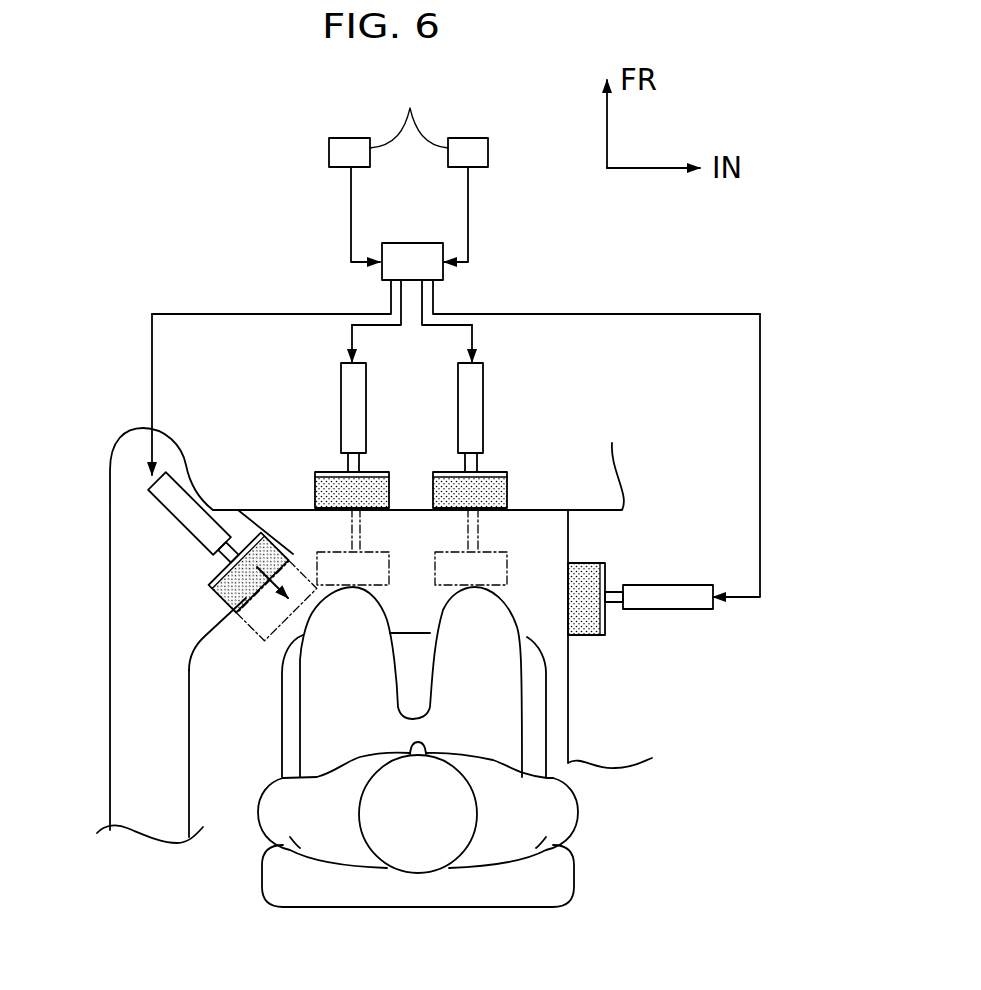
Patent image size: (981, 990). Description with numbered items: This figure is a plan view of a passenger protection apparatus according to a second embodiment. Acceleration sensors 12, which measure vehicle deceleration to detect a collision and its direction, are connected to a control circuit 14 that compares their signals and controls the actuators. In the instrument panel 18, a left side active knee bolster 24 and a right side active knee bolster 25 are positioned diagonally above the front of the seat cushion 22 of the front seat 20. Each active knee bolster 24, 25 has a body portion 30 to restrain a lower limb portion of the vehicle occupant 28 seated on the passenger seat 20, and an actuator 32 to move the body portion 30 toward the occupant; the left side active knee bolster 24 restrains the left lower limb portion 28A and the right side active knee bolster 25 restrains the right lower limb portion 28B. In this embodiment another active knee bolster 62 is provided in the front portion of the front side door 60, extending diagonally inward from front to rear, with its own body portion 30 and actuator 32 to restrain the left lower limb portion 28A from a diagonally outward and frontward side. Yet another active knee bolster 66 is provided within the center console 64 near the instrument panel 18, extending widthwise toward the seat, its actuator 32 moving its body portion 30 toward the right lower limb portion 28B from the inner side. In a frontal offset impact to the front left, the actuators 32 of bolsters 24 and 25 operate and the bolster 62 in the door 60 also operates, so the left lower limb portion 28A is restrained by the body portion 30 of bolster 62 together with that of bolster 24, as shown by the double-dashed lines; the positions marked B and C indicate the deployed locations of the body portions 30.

The acceleration sensors 12 is at (410, 111).
The control circuit 14 is at (415, 243).
The instrument panel 18 is at (590, 517).
The front seat 20 is at (346, 908).
The seat cushion 22 is at (550, 748).
The left side active knee bolster 24 is at (278, 383).
The right side active knee bolster 25 is at (549, 383).
The vehicle occupant 28 is at (432, 734).
The left lower limb portion 28A is at (356, 603).
The right lower limb portion 28B is at (477, 601).
The body portion 30 is at (309, 543).
The actuator 32 is at (338, 395).
The front side door 60 is at (112, 756).
The active knee bolster 62 is at (70, 570).
The center console 64 is at (557, 703).
The active knee bolster 66 is at (725, 507).
The pad position B is at (315, 620).
The pad position C is at (260, 590).